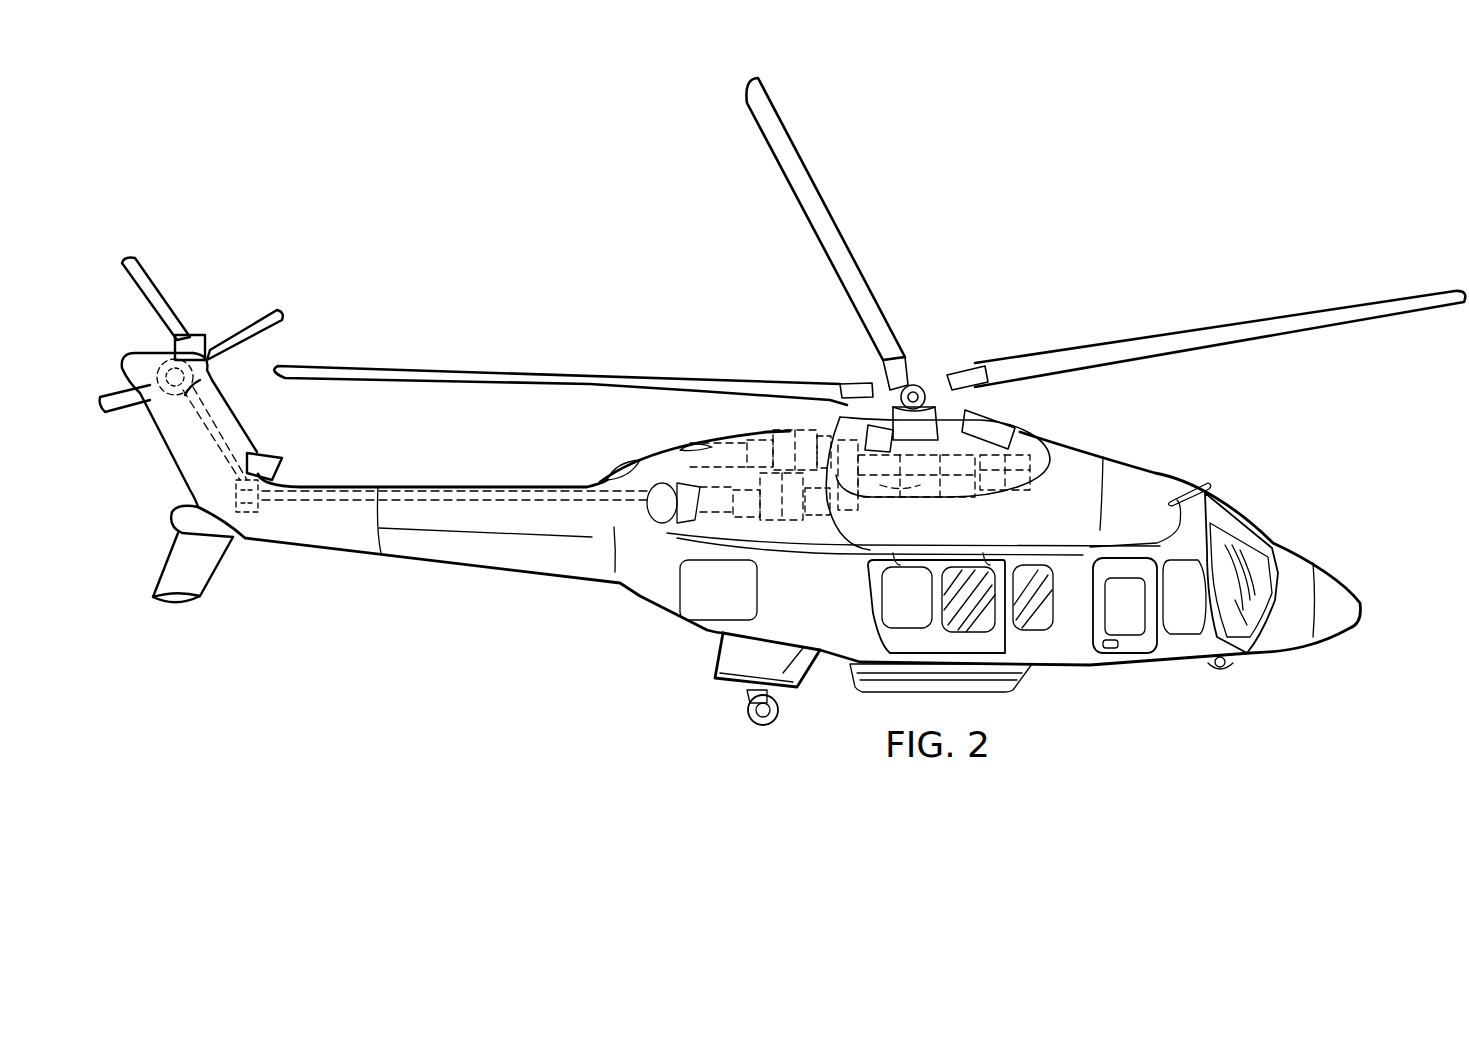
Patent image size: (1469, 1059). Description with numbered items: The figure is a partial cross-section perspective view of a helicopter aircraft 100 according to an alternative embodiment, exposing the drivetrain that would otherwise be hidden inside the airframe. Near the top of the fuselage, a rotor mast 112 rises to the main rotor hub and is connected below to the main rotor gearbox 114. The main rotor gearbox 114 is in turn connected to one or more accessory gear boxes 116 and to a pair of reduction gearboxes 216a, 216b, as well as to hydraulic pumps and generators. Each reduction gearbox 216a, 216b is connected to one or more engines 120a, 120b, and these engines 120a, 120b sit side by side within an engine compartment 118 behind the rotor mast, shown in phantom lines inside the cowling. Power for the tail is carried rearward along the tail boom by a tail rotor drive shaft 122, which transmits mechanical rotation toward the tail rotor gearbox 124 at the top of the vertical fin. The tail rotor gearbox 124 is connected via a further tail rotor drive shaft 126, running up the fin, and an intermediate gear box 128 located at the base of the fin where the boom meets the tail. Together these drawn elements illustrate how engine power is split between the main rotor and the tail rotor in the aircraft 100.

The aircraft 100 is at (1156, 122).
The rotor mast 112 is at (883, 497).
The main rotor gearbox 114 is at (928, 497).
The accessory gear box 116 is at (1010, 487).
The engine compartment 118 is at (803, 418).
The engine 120a is at (760, 527).
The engine 120b is at (777, 430).
The reduction gearbox 216a is at (827, 550).
The reduction gearbox 216b is at (823, 427).
The tail rotor drive shaft 122 is at (467, 490).
The tail rotor gearbox 124 is at (153, 353).
The tail rotor drive shaft 126 is at (233, 433).
The intermediate gear box 128 is at (253, 530).